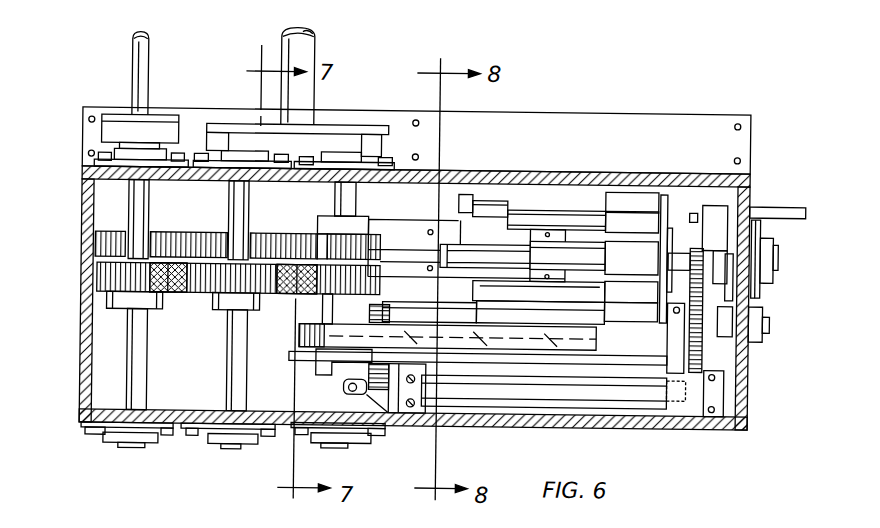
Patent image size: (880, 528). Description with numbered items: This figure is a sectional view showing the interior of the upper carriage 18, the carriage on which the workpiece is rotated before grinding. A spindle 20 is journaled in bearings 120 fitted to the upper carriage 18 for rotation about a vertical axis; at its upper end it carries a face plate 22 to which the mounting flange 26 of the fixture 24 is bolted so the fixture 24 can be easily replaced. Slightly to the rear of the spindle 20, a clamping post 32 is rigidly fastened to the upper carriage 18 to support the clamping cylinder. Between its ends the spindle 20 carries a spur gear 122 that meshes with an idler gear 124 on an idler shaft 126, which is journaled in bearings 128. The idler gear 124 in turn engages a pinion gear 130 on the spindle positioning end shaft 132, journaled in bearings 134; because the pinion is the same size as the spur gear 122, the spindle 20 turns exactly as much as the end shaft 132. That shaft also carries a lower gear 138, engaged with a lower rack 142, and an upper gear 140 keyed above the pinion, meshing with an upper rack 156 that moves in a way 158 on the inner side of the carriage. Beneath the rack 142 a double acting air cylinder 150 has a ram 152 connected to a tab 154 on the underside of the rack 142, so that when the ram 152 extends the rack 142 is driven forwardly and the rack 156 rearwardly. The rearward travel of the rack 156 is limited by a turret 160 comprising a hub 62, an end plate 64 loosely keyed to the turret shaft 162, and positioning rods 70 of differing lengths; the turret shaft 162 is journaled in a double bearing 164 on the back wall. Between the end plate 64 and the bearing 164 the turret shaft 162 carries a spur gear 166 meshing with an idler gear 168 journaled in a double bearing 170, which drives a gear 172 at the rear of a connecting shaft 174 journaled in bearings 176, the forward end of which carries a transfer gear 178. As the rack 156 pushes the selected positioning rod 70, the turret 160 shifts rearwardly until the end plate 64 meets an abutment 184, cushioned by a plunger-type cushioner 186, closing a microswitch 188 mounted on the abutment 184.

The upper carriage 18 is at (634, 110).
The spindle 20 is at (130, 336).
The face plate 22 is at (103, 137).
The fixture 24 is at (133, 50).
The mounting flange 26 is at (122, 117).
The clamping post 32 is at (313, 41).
The hub 62 is at (537, 244).
The end plate 64 is at (659, 208).
The positioning rods 70 is at (453, 252).
The bearings 120 is at (93, 187).
The spur gear 122 is at (100, 277).
The idler gear 124 is at (205, 288).
The idler shaft 126 is at (233, 365).
The bearings 128 is at (233, 155).
The pinion gear 130 is at (305, 304).
The spindle positioning end shaft 132 is at (334, 214).
The bearings 134 is at (335, 151).
The gear 138 is at (320, 352).
The gear 140 is at (330, 249).
The rack 142 is at (543, 349).
The double acting air cylinder 150 is at (480, 397).
The ram 152 is at (378, 412).
The tab 154 is at (350, 368).
The rack 156 is at (190, 246).
The way 158 is at (388, 236).
The turret 160 is at (545, 182).
The turret shaft 162 is at (677, 255).
The double bearing 164 is at (767, 243).
The spur gear 166 is at (632, 276).
The idler gear 168 is at (704, 352).
The double bearing 170 is at (760, 313).
The gear 172 is at (704, 366).
The connecting shaft 174 is at (630, 351).
The bearings 176 is at (673, 360).
The transfer gear 178 is at (336, 338).
The abutment 184 is at (712, 200).
The plunger-type cushioner 186 is at (808, 179).
The microswitch 188 is at (686, 200).